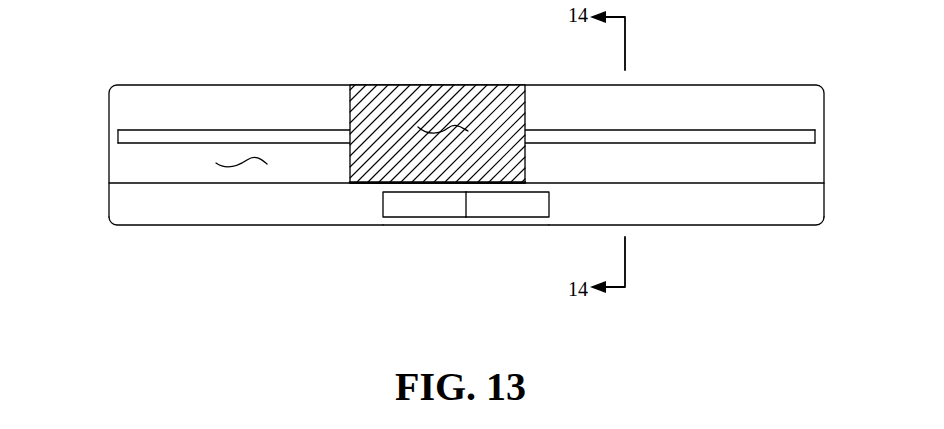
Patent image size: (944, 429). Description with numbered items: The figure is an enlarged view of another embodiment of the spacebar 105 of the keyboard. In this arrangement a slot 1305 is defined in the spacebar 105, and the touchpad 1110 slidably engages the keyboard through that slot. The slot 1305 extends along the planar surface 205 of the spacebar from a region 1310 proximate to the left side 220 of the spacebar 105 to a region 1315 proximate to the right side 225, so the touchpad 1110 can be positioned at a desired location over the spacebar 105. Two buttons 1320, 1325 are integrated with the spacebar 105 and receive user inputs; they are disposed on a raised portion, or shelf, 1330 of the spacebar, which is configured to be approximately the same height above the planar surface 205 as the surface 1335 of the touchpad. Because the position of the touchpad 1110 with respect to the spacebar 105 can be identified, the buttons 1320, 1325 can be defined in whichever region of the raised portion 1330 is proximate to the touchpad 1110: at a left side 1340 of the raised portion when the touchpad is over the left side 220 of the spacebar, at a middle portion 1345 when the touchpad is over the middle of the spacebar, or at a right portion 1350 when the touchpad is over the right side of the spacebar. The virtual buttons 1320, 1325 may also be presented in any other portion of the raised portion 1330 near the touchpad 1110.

The spacebar 105 is at (109, 108).
The planar surface 205 is at (247, 160).
The left side 220 is at (143, 168).
The right side 225 is at (807, 158).
The touchpad 1110 is at (387, 92).
The slot 1305 is at (280, 138).
The region proximate to the left side 1310 is at (128, 130).
The region proximate to the right side 1315 is at (808, 128).
The button 1320 is at (425, 203).
The button 1325 is at (504, 203).
The raised portion 1330 is at (320, 210).
The surface of the touchpad 1335 is at (446, 130).
The left side of the raised portion 1340 is at (185, 207).
The middle portion of the raised portion 1345 is at (466, 217).
The right portion of the raised portion 1350 is at (768, 203).